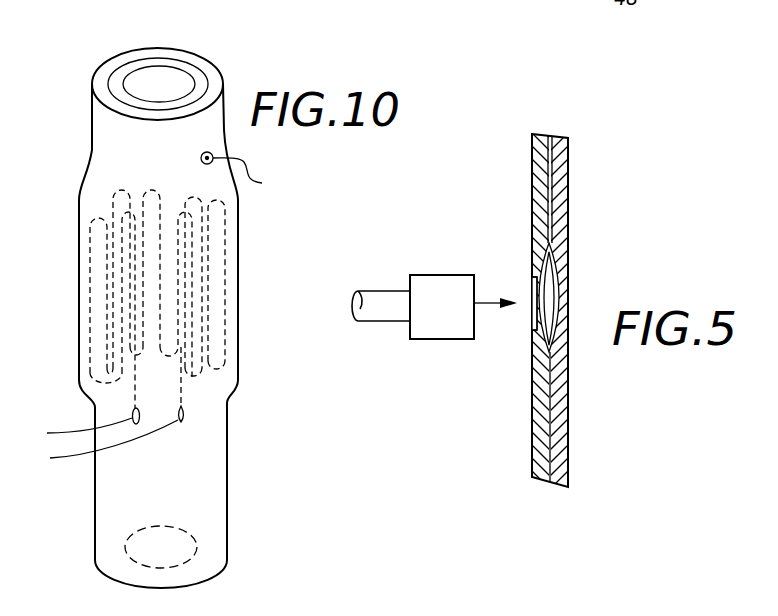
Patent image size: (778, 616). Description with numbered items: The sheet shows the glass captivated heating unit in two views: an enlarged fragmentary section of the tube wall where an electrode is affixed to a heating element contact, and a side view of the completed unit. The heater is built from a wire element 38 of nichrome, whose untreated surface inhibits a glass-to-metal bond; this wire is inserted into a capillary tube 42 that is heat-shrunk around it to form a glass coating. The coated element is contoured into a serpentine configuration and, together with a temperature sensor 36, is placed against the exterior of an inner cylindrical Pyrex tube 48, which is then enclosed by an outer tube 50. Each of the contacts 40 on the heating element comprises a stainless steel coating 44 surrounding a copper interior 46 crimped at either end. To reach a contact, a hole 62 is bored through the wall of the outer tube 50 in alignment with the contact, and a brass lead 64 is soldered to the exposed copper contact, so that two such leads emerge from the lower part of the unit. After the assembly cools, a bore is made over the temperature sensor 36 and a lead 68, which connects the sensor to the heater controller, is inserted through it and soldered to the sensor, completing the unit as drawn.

In FIG. 10, the temperature sensor 36 is at (201, 158).
In FIG. 10, the wire element 38 is at (226, 300).
In FIG. 10, the contacts 40 is at (141, 413).
In FIG. 10, the capillary tube 42 is at (226, 258).
In FIG. 5, the stainless steel coating 44 is at (553, 258).
In FIG. 5, the copper interior 46 is at (549, 293).
In FIG. 10, the inner cylindrical Pyrex tube 48 is at (175, 65).
In FIG. 5, the inner cylindrical Pyrex tube 48 is at (562, 420).
In FIG. 10, the outer tube 50 is at (213, 78).
In FIG. 5, the outer tube 50 is at (532, 420).
In FIG. 5, the hole 62 is at (535, 320).
In FIG. 10, the brass lead 64 is at (62, 430).
In FIG. 5, the brass lead 64 is at (459, 259).
In FIG. 10, the lead 68 is at (252, 174).